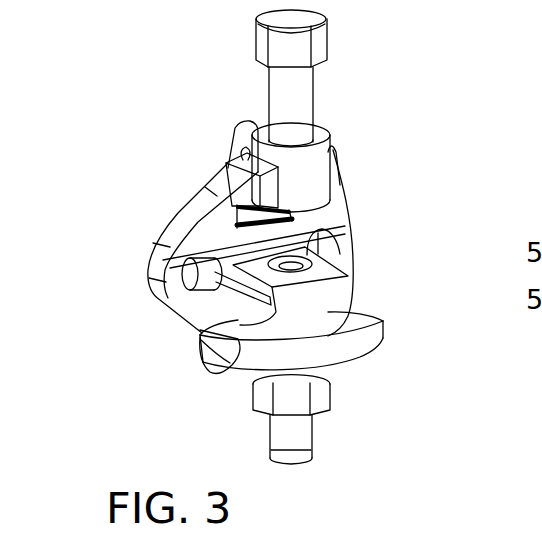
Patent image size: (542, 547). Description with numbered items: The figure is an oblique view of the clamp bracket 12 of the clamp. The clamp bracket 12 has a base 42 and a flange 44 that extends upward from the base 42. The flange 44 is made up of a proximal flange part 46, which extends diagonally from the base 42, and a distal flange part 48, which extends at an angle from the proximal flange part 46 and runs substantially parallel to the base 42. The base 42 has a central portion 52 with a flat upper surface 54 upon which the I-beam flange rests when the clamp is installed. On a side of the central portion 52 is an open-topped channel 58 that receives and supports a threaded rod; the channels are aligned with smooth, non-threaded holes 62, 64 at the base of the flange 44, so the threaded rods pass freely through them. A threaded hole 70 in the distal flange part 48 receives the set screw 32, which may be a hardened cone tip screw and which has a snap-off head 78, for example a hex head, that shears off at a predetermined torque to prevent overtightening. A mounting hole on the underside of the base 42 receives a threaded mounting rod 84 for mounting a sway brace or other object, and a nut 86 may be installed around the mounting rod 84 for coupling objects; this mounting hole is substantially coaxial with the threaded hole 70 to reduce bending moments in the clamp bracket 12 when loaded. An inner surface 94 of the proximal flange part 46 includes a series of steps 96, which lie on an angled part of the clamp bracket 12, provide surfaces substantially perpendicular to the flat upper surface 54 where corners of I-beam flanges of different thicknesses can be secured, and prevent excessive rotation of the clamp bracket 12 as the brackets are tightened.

The clamp bracket 12 is at (156, 162).
The set screw 32 is at (281, 93).
The base 42 is at (266, 281).
The flange 44 is at (156, 248).
The proximal flange part 46 is at (178, 227).
The distal flange part 48 is at (335, 174).
The central portion 52 is at (330, 311).
The flat upper surface 54 is at (328, 276).
The channel 58 is at (228, 335).
The hole 62 is at (160, 297).
The hole 64 is at (318, 252).
The threaded hole 70 is at (308, 236).
The snap-off head 78 is at (322, 42).
The threaded mounting rod 84 is at (295, 438).
The nut 86 is at (264, 395).
The inner surface 94 is at (200, 224).
The steps 96 is at (222, 205).